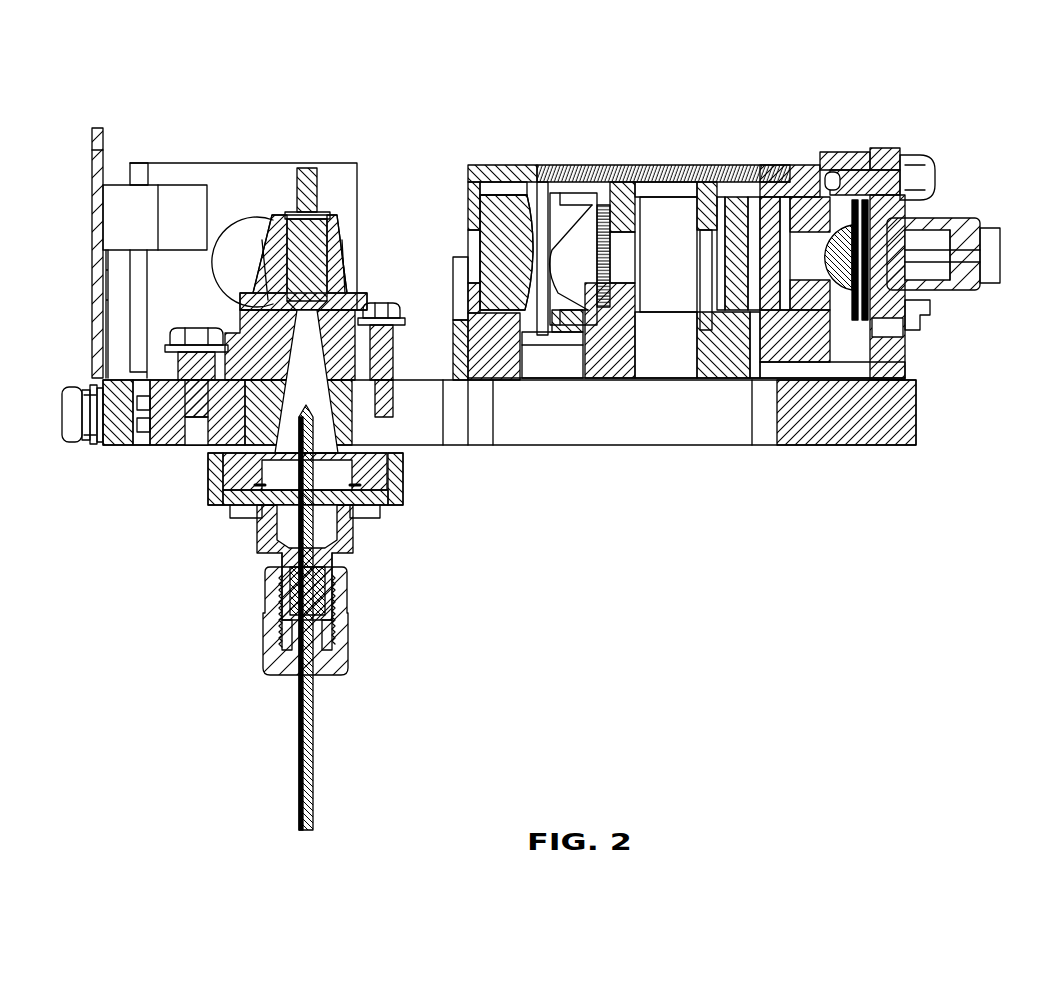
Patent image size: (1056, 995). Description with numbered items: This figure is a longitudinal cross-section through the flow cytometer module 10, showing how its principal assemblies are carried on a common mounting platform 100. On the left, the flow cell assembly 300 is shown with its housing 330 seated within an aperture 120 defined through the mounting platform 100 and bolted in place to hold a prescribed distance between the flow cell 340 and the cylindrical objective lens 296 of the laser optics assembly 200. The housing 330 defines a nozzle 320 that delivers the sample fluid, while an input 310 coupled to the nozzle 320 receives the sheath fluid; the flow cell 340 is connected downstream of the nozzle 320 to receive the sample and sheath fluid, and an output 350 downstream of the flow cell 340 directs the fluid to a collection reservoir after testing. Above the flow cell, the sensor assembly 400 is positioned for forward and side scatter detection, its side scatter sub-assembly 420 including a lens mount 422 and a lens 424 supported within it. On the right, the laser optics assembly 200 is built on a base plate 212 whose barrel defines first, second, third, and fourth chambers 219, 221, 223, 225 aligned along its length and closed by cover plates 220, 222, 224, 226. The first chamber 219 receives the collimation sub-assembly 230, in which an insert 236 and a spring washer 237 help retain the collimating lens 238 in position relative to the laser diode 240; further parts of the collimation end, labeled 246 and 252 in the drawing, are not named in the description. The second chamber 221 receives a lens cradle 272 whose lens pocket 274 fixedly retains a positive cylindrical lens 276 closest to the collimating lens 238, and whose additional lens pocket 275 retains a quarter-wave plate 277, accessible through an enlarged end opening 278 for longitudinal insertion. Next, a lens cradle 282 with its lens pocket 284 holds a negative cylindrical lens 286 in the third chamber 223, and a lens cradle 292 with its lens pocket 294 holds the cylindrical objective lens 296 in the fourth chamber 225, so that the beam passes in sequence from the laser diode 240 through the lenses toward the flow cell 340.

The module 10 is at (438, 112).
The mounting platform 100 is at (837, 432).
The aperture 120 is at (353, 412).
The laser optics assembly 200 is at (703, 146).
The base plate 212 is at (823, 358).
The first chamber 219 is at (788, 330).
The cover plate 220 is at (780, 200).
The second chamber 221 is at (712, 330).
The second cover plate 222 is at (722, 200).
The third chamber 223 is at (573, 300).
The third cover plate 224 is at (583, 170).
The fourth chamber 225 is at (548, 338).
The fourth cover plate 226 is at (508, 235).
The collimation sub-assembly 230 is at (912, 340).
The insert 236 is at (745, 320).
The spring washer 237 is at (858, 183).
The collimating lens 238 is at (872, 287).
The laser diode 240 is at (910, 243).
The knob 246 is at (882, 150).
The top cap 252 is at (833, 172).
The lens cradle 272 is at (728, 365).
The lens pocket 274 is at (738, 243).
The additional lens pocket 275 is at (700, 340).
The positive cylindrical lens 276 is at (757, 230).
The quarter-wave plate 277 is at (650, 240).
The enlarged end opening 278 is at (672, 230).
The lens cradle 282 is at (637, 355).
The lens pocket 284 is at (583, 247).
The negative cylindrical lens 286 is at (618, 195).
The lens cradle 292 is at (503, 330).
The lens pocket 294 is at (478, 195).
The cylindrical objective lens 296 is at (516, 195).
The flow cell assembly 300 is at (362, 638).
The input 310 is at (197, 503).
The nozzle 320 is at (293, 458).
The housing 330 is at (388, 448).
The flow cell 340 is at (313, 248).
The output 350 is at (312, 155).
The sensor assembly 400 is at (125, 138).
The side scatter sub-assembly 420 is at (233, 303).
The lens mount 422 is at (262, 240).
The lens 424 is at (256, 265).